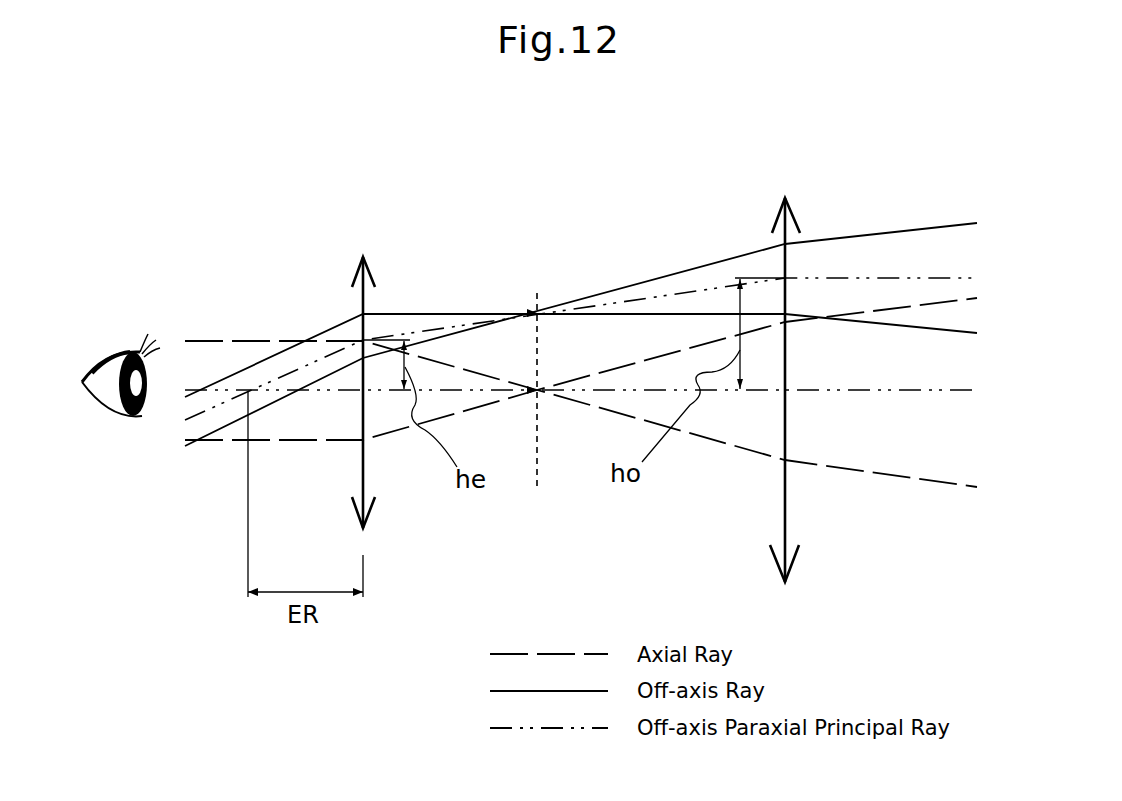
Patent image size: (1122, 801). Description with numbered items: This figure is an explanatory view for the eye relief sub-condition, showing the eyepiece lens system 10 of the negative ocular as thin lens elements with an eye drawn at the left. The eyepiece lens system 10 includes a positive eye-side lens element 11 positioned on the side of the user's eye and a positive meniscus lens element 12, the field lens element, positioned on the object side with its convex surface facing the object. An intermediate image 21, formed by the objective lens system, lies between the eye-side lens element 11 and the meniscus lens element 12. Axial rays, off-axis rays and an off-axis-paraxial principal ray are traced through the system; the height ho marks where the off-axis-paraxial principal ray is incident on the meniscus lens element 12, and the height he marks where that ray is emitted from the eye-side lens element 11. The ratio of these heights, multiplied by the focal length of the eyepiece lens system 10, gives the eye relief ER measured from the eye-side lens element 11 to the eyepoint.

The eyepiece lens system 10 is at (823, 180).
The eye-side lens element 11 is at (365, 465).
The meniscus lens element 12 is at (785, 495).
The intermediate image 21 is at (538, 467).